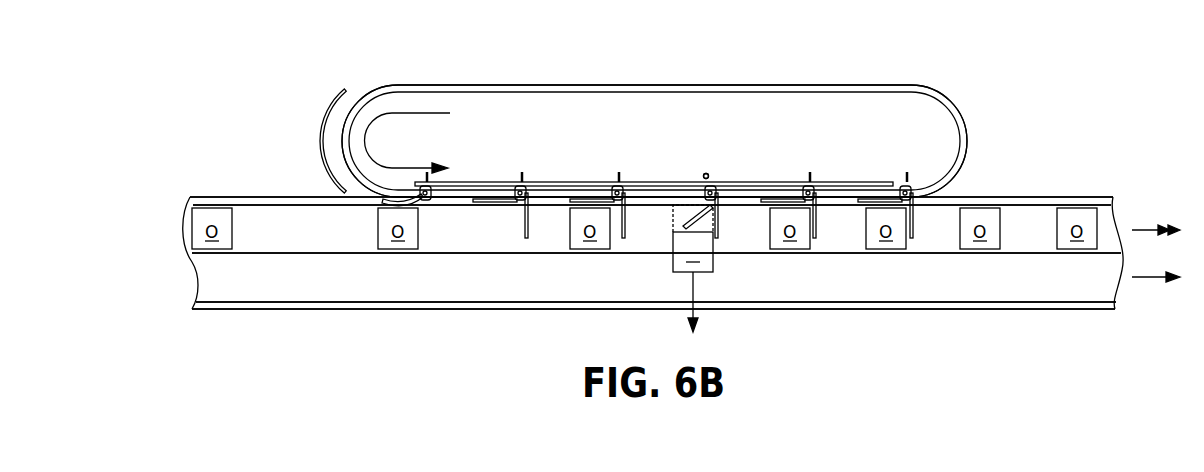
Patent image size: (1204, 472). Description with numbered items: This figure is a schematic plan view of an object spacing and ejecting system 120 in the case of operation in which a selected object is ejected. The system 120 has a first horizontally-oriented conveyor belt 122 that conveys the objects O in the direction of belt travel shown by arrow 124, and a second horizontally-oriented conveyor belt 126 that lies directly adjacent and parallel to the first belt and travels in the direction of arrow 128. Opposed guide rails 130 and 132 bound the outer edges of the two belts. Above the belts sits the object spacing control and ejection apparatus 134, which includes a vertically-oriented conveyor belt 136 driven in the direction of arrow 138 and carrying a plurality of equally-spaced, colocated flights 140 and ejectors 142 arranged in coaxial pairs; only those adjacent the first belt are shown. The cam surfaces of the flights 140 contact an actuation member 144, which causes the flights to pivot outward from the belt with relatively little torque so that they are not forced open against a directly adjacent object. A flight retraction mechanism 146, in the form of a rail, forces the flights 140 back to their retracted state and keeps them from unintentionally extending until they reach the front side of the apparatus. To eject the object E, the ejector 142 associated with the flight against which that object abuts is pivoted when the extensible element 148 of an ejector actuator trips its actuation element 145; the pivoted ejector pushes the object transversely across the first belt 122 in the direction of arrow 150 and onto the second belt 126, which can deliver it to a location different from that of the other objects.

The object spacing and ejecting system 120 is at (1108, 76).
The first horizontally-oriented conveyor belt 122 is at (253, 218).
The arrow indicating direction of belt travel 124 is at (1150, 228).
The second horizontally-oriented conveyor belt 126 is at (253, 287).
The arrow indicating direction of travel 128 is at (1147, 281).
The guide rail 130 is at (1037, 197).
The guide rail 132 is at (1037, 303).
The object spacing control and ejection apparatus 134 is at (984, 102).
The vertically-oriented conveyor belt 136 is at (653, 86).
The arrow indicating belt drive direction 138 is at (408, 143).
The flight 140 is at (525, 236).
The ejector 142 is at (497, 201).
The actuation member 144 is at (545, 183).
The actuation element 145 is at (694, 178).
The flight retraction mechanism 146 is at (322, 128).
The extensible element 148 is at (708, 174).
The arrow indicating ejection direction 150 is at (688, 287).